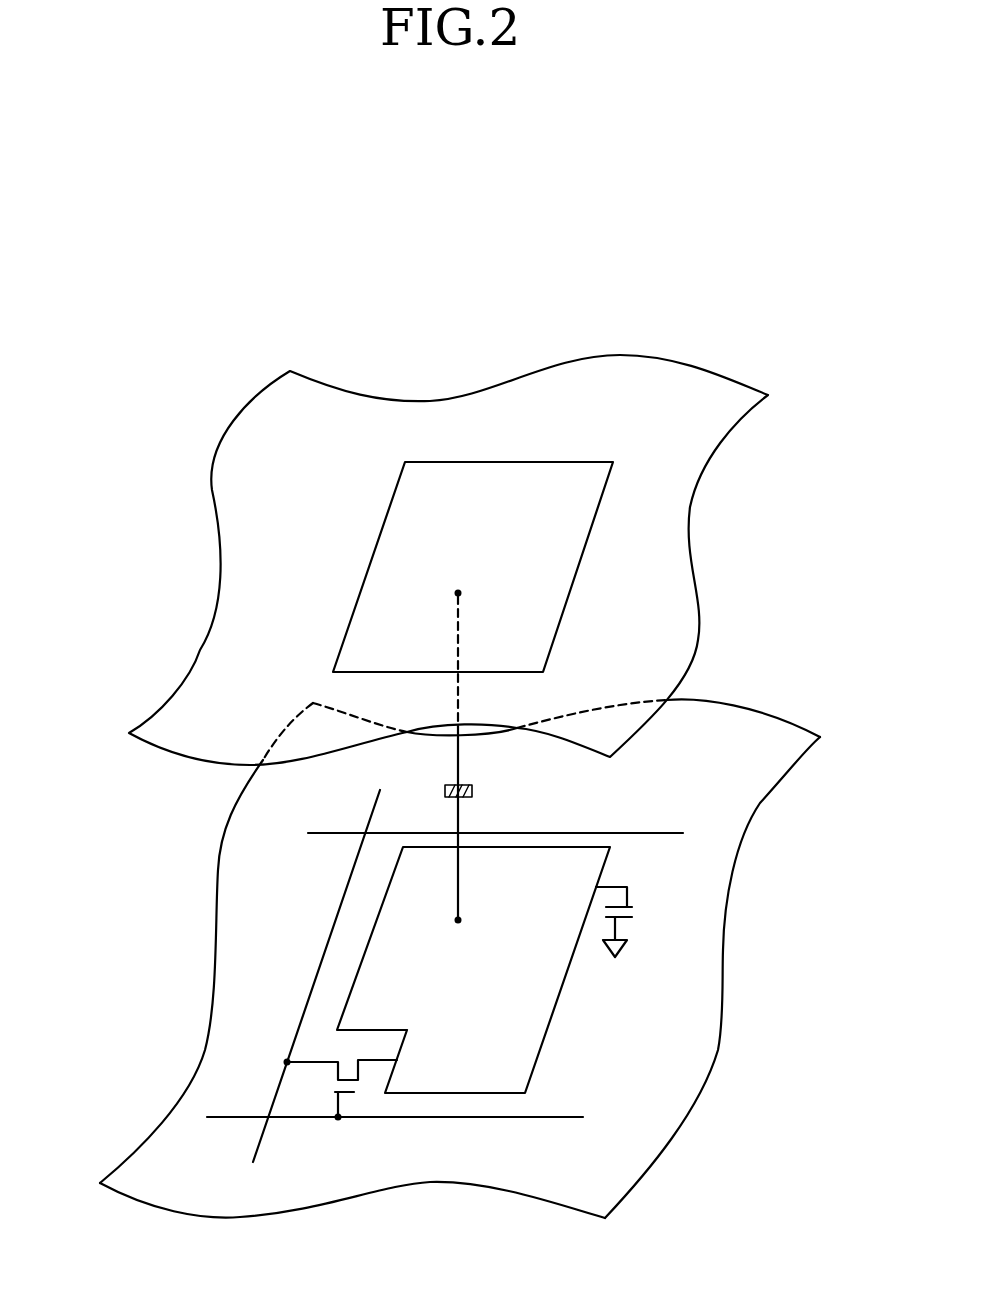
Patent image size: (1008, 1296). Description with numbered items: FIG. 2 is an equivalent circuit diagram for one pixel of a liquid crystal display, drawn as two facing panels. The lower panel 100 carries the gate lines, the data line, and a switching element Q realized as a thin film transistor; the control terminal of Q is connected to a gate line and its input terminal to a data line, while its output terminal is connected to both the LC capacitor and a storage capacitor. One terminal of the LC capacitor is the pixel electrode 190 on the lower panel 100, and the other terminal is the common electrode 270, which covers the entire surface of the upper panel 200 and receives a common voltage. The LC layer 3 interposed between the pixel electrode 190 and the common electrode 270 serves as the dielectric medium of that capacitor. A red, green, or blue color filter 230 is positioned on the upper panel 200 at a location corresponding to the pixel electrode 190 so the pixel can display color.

The LC layer 3 is at (118, 852).
The lower panel 100 is at (740, 936).
The pixel electrode 190 is at (548, 1025).
The upper panel 200 is at (476, 560).
The color filter 230 is at (575, 578).
The common electrode 270 is at (690, 527).